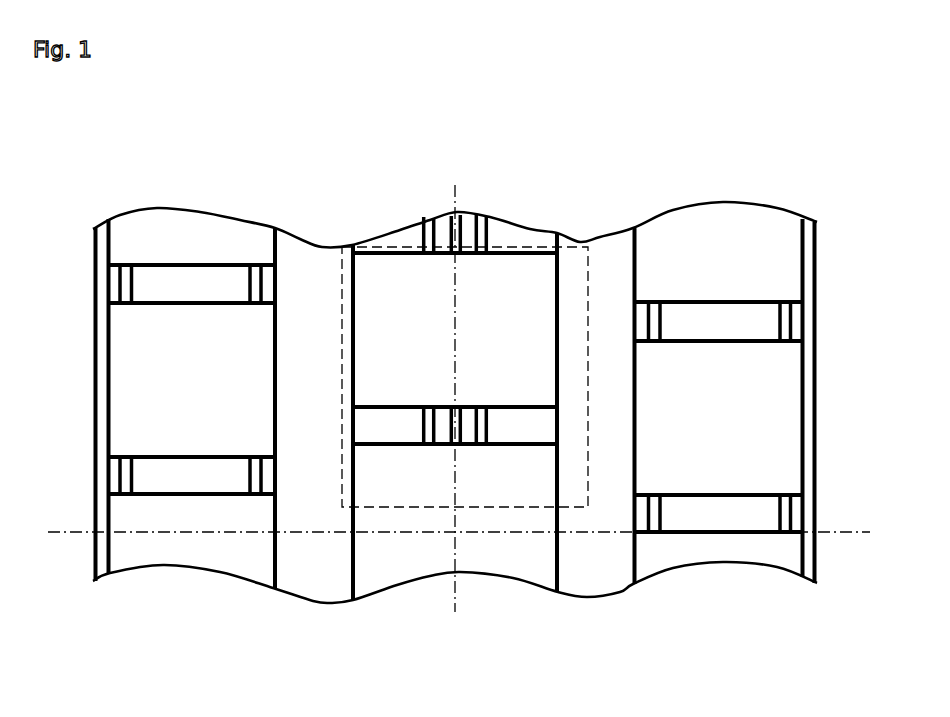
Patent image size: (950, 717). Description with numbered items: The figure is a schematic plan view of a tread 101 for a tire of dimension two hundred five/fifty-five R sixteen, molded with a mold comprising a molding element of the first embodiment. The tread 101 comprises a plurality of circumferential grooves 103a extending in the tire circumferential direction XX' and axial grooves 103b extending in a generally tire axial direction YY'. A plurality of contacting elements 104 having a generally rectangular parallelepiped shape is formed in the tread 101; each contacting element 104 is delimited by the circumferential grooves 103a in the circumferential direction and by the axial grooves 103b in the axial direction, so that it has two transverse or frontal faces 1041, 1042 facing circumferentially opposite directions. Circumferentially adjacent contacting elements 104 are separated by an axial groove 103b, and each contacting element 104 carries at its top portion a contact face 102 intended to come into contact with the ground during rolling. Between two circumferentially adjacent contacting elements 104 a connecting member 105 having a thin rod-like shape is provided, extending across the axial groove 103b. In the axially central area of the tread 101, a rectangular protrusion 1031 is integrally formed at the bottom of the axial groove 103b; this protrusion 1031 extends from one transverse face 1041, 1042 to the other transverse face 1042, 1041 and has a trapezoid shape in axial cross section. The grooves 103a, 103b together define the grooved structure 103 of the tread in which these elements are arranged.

The tread 101 is at (180, 177).
The contact face 102 is at (160, 225).
The center partition unit 103 is at (403, 235).
The circumferential groove 103a is at (325, 560).
The axial groove 103b is at (469, 421).
The rectangular protrusion 1031 is at (470, 240).
The contacting element 104 is at (105, 240).
The transverse face 1041 is at (188, 264).
The transverse face 1042 is at (188, 301).
The connecting member 105 is at (155, 307).